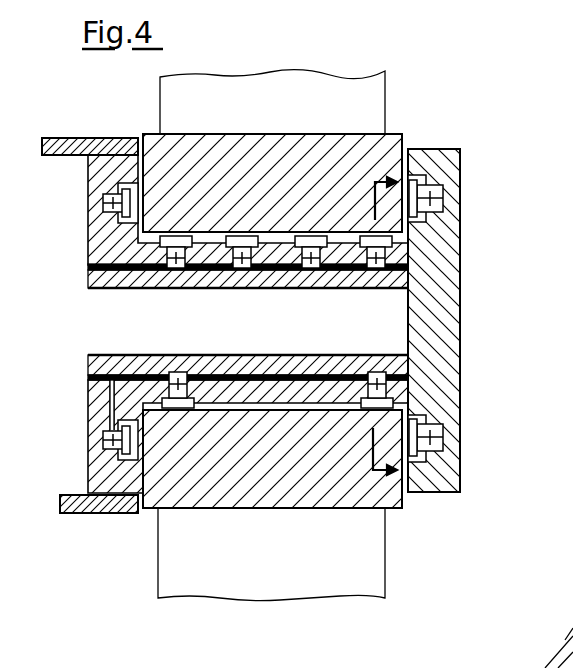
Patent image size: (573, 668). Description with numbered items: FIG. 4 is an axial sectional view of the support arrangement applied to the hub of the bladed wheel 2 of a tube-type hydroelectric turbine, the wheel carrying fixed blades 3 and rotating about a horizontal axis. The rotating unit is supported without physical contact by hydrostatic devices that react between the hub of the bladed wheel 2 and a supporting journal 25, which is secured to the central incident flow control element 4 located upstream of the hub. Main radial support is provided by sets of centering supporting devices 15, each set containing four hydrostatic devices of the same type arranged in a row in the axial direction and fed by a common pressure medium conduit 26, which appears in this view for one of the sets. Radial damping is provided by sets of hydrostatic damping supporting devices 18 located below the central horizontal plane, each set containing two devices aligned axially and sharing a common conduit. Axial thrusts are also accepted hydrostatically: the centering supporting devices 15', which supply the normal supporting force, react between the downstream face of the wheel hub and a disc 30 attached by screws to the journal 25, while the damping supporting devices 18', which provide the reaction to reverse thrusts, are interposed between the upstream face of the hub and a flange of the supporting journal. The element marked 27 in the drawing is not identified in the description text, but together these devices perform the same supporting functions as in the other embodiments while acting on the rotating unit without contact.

The bladed wheel 2 is at (150, 512).
The fixed blades 3 is at (368, 92).
The central incident flow control element 4 is at (76, 150).
The centering supporting devices 15 is at (309, 282).
The centering supporting devices 15' is at (461, 318).
The hydrostatic damping supporting devices 18 is at (276, 322).
The damping supporting devices 18' is at (90, 333).
The supporting journal 25 is at (98, 278).
The common pressure medium conduit 26 is at (146, 275).
The upper bearing housing 27 is at (392, 140).
The disc 30 is at (447, 302).